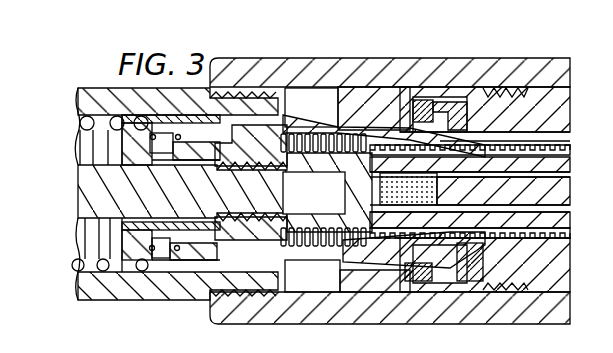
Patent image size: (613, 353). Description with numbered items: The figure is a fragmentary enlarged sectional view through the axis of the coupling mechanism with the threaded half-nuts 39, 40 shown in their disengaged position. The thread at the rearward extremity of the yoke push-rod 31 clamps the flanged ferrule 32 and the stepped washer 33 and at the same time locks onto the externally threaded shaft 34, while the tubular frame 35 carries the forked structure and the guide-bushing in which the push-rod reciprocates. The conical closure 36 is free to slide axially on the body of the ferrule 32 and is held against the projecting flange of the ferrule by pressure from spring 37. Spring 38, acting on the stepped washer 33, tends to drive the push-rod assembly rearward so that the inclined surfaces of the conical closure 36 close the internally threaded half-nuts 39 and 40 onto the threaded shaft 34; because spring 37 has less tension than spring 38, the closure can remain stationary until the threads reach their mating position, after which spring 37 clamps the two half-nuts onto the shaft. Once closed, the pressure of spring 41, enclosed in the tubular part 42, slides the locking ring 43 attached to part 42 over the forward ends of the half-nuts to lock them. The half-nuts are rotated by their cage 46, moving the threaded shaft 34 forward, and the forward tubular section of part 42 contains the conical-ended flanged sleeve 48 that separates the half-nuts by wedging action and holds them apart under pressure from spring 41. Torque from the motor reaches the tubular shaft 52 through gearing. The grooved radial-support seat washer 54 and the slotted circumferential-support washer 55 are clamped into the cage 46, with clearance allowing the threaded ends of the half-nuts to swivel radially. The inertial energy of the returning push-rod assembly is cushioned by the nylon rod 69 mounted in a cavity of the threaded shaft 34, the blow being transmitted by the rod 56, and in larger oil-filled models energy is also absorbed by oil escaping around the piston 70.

The yoke push-rod 31 is at (108, 190).
The flanged ferrule 32 is at (220, 110).
The stepped washer 33 is at (137, 252).
The externally threaded shaft 34 is at (530, 228).
The tubular frame 35 is at (90, 289).
The conical closure 36 is at (263, 128).
The spring 37 is at (197, 268).
The spring 38 is at (80, 120).
The half-nut 39 is at (358, 130).
The half-nut 40 is at (450, 270).
The spring 41 is at (530, 247).
The tubular part 42 is at (533, 145).
The locking ring 43 is at (332, 268).
The half-nuts cage 46 is at (383, 287).
The conical-ended flanged sleeve 48 is at (435, 130).
The tubular shaft 52 is at (545, 112).
The grooved half-nuts radial-support seat washer 54 is at (467, 272).
The slotted half-nuts circumferential-support washer 55 is at (405, 122).
The rod 56 is at (545, 190).
The nylon rod 69 is at (482, 135).
The piston 70 is at (505, 140).